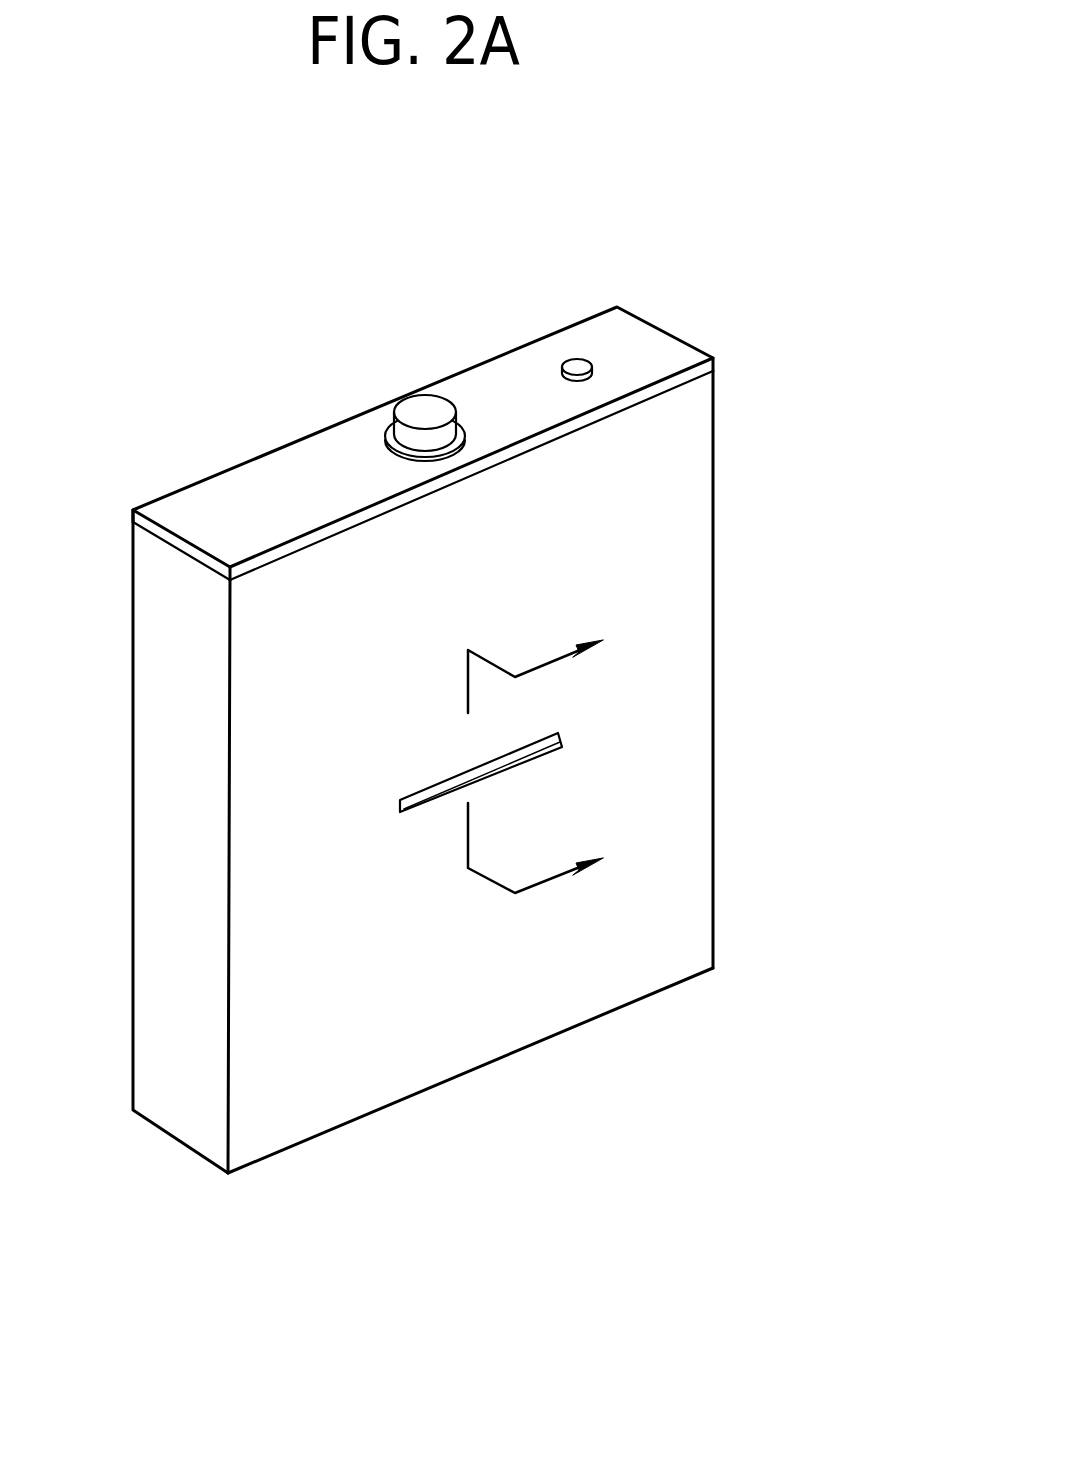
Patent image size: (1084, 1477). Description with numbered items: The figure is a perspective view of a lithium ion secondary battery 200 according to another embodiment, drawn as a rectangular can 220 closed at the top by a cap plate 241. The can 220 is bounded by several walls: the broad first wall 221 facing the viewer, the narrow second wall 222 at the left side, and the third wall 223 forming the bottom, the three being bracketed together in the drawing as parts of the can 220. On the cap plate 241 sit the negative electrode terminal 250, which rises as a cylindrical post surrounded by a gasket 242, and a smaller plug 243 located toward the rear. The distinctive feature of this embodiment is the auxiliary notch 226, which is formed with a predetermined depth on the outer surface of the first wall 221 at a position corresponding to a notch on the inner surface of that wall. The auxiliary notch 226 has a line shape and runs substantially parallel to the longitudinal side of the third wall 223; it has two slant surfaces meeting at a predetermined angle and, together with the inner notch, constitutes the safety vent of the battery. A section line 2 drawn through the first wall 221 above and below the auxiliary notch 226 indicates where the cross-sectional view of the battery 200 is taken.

The lithium ion secondary battery 200 is at (782, 313).
The can 220 is at (397, 1322).
The first wall 221 is at (347, 1080).
The second wall 222 is at (195, 1108).
The third wall 223 is at (285, 1152).
The auxiliary notch 226 is at (510, 767).
The cap plate 241 is at (237, 485).
The gasket 242 is at (388, 452).
The plug 243 is at (575, 362).
The negative electrode terminal 250 is at (422, 402).
The line 2- 2 is at (555, 750).